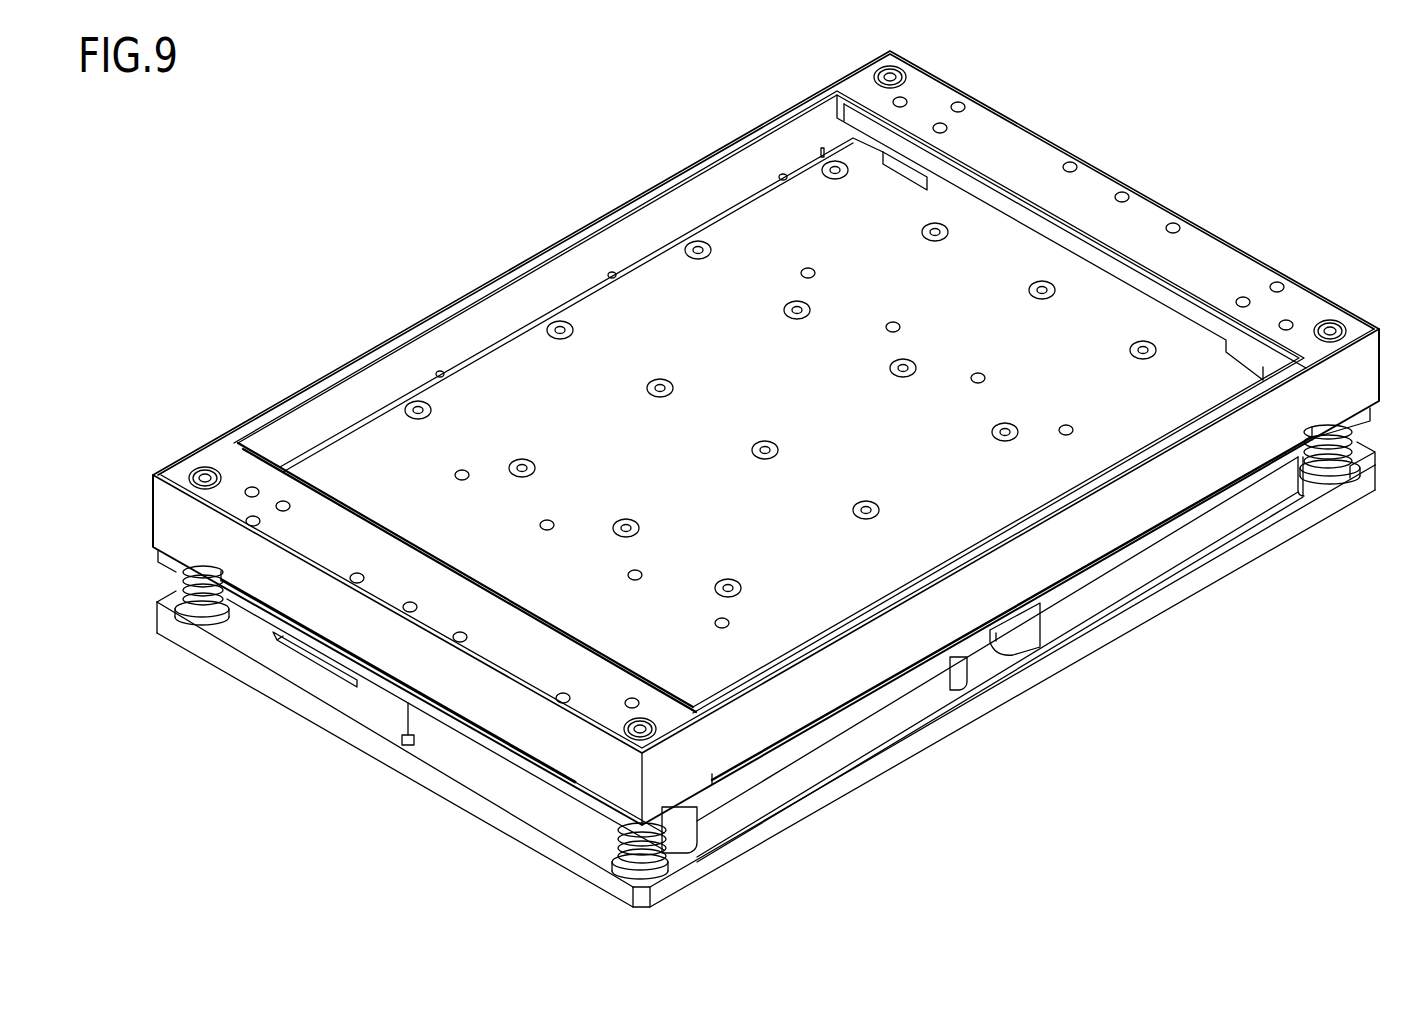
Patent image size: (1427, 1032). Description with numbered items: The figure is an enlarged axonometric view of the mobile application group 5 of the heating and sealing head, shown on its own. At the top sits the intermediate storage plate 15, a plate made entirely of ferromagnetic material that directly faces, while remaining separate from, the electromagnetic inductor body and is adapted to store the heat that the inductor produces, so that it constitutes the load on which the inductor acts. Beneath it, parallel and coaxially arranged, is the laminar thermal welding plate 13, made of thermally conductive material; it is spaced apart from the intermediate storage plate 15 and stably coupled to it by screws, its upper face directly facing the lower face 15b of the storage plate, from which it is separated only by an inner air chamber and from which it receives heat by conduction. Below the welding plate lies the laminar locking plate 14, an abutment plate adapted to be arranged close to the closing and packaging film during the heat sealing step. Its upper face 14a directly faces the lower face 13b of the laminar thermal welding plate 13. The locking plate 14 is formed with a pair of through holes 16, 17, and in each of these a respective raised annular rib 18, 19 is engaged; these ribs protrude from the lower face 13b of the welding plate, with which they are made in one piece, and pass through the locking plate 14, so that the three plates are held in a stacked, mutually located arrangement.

The mobile application group 5 is at (656, 164).
The laminar thermal welding plate 13 is at (257, 615).
The lower face of the laminar thermal welding plate 13b is at (375, 698).
The laminar locking plate 14 is at (677, 889).
The upper face of the laminar locking plate 14a is at (518, 812).
The intermediate storage plate 15 is at (992, 245).
The lower face of the intermediate heat storage plate 15b is at (152, 552).
The through hole 16 is at (966, 690).
The through hole 17 is at (1316, 492).
The raised annular rib 18 is at (890, 710).
The raised annular rib 19 is at (1258, 505).